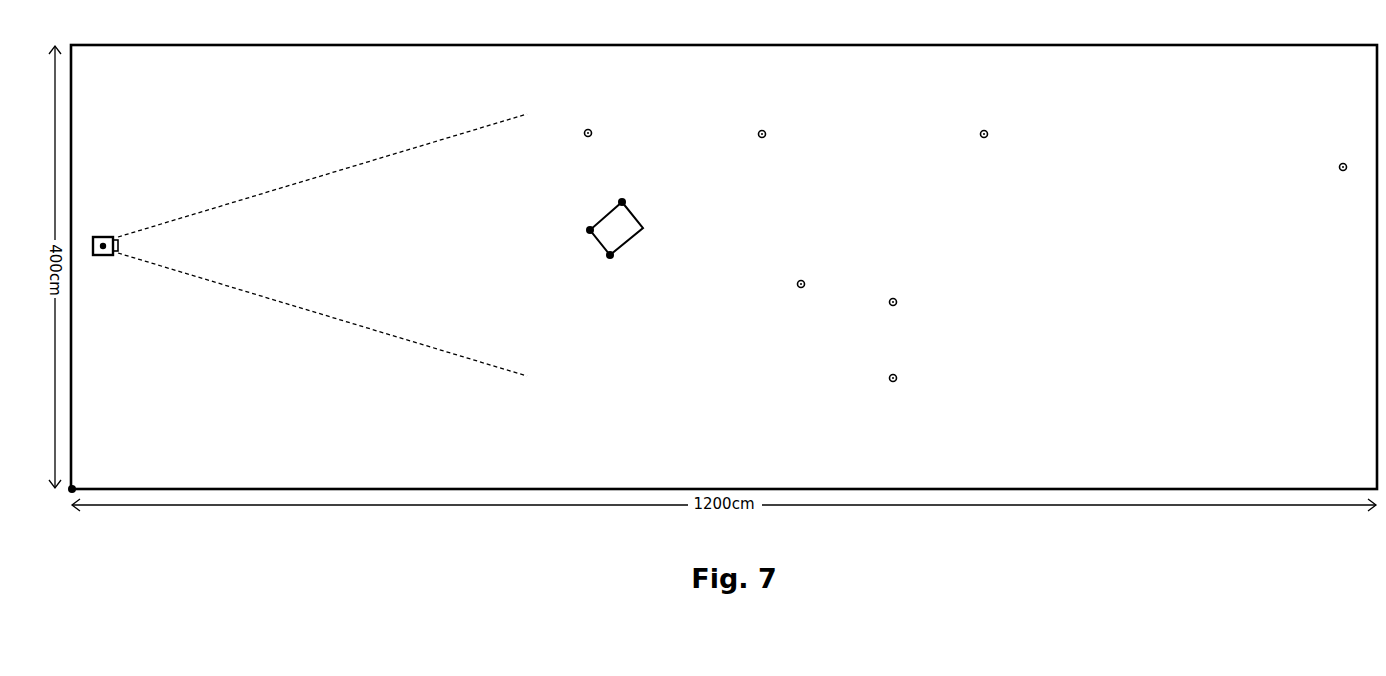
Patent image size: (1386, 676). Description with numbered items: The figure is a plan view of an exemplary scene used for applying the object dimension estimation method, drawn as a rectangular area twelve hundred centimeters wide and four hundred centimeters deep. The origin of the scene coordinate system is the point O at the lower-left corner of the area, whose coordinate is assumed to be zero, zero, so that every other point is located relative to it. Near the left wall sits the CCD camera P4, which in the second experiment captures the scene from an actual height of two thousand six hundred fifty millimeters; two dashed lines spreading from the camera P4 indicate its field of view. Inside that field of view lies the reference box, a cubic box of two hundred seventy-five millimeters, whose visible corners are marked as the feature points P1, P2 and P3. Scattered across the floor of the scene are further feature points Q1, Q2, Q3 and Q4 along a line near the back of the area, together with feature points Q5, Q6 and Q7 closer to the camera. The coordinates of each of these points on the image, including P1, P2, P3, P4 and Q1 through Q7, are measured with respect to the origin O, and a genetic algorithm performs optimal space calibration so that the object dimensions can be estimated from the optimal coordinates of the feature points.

The point O is at (82, 477).
The CCD camera P4 is at (310, 245).
The feature point P1 is at (616, 215).
The feature point P2 is at (579, 240).
The feature point P3 is at (612, 271).
The feature point Q1 is at (587, 121).
The feature point Q2 is at (760, 122).
The feature point Q3 is at (983, 122).
The feature point Q4 is at (1342, 154).
The feature point Q5 is at (799, 271).
The feature point Q6 is at (908, 302).
The feature point Q7 is at (908, 380).